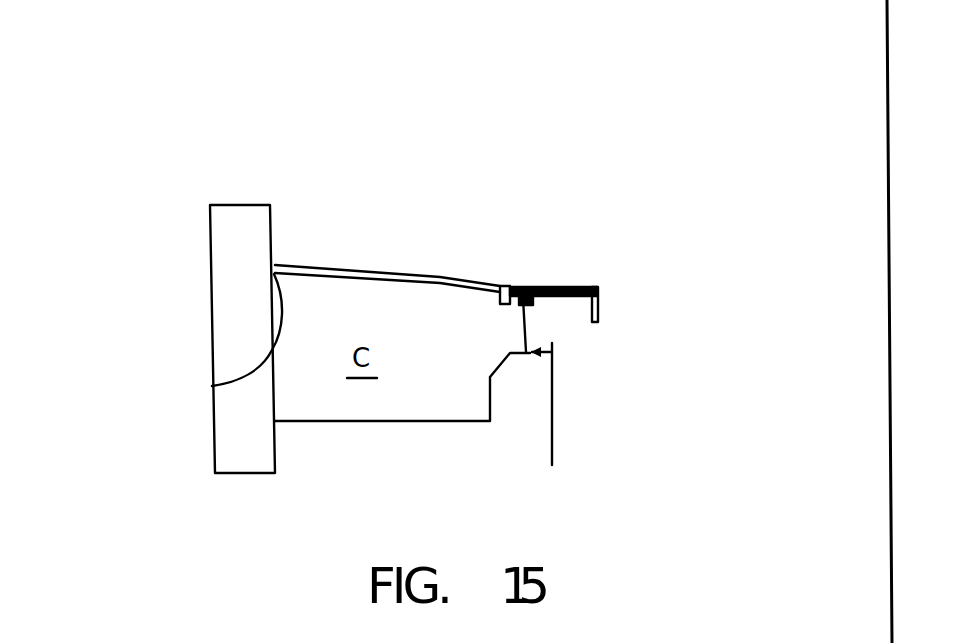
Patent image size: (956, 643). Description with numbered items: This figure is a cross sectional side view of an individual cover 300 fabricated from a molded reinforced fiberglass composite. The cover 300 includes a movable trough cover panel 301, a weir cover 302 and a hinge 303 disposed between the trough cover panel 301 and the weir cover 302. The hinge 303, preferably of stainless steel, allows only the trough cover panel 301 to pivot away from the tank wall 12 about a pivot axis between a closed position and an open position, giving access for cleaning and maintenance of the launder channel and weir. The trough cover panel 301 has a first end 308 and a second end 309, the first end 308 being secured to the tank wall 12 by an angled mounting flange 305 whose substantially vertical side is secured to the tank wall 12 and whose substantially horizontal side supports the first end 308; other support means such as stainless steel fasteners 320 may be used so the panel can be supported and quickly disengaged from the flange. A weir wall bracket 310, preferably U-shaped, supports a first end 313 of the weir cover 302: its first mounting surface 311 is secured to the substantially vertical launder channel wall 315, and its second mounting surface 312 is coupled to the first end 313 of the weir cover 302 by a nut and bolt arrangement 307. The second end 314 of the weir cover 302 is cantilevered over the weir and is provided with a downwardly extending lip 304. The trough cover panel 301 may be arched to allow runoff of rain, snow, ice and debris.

The tank wall 12 is at (252, 280).
The individual cover 300 is at (428, 150).
The trough cover panel 301 is at (400, 265).
The weir cover 302 is at (583, 287).
The hinge 303 is at (522, 278).
The downwardly extending lip 304 is at (600, 310).
The angled mounting flange 305 is at (212, 386).
The nut and bolt arrangement 307 is at (540, 287).
The first end of trough cover panel 308 is at (274, 272).
The second end of trough cover panel 309 is at (499, 281).
The weir wall bracket 310 is at (522, 346).
The first mounting surface 311 is at (535, 347).
The second mounting surface 312 is at (528, 300).
The first end of weir cover 313 is at (524, 285).
The second end of weir cover 314 is at (628, 287).
The launder channel wall 315 is at (528, 355).
The stainless steel fasteners 320 is at (278, 265).